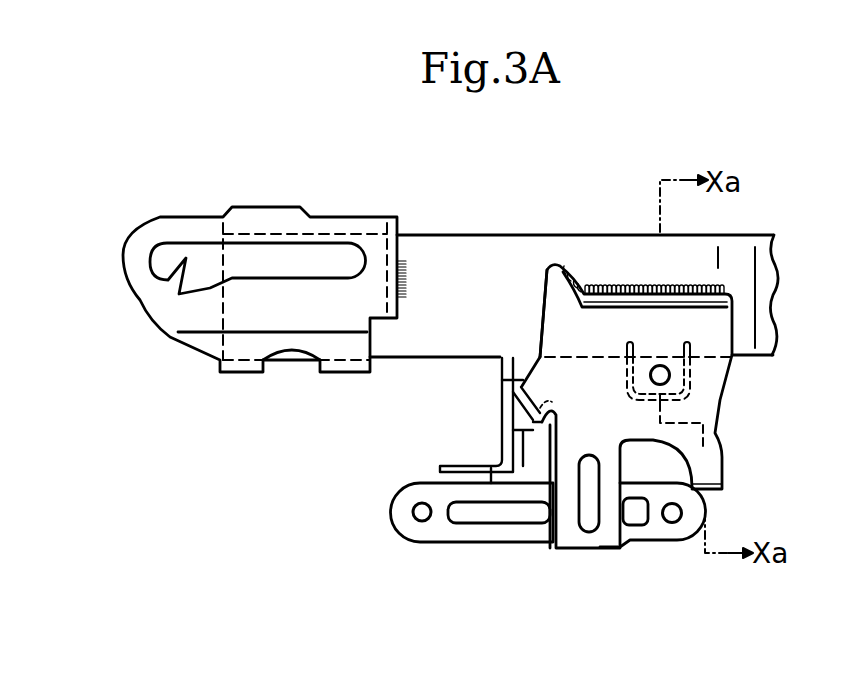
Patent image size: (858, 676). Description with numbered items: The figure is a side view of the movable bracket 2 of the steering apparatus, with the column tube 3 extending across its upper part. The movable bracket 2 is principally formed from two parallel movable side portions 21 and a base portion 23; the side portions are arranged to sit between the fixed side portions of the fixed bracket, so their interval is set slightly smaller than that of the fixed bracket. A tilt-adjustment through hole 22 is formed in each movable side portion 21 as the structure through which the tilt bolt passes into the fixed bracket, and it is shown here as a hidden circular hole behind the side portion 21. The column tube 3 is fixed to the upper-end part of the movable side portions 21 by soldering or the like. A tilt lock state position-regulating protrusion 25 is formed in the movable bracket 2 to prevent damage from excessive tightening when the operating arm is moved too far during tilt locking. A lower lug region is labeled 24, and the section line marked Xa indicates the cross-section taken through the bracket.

The movable bracket 2 is at (727, 403).
The column tube 3 is at (495, 237).
The movable side portion 21 is at (553, 357).
The tilt-adjustment through hole 22 is at (672, 373).
The base portion 23 is at (580, 550).
The hinge lug 24 is at (718, 492).
The tilt lock state position-regulating protrusion 25 is at (527, 427).